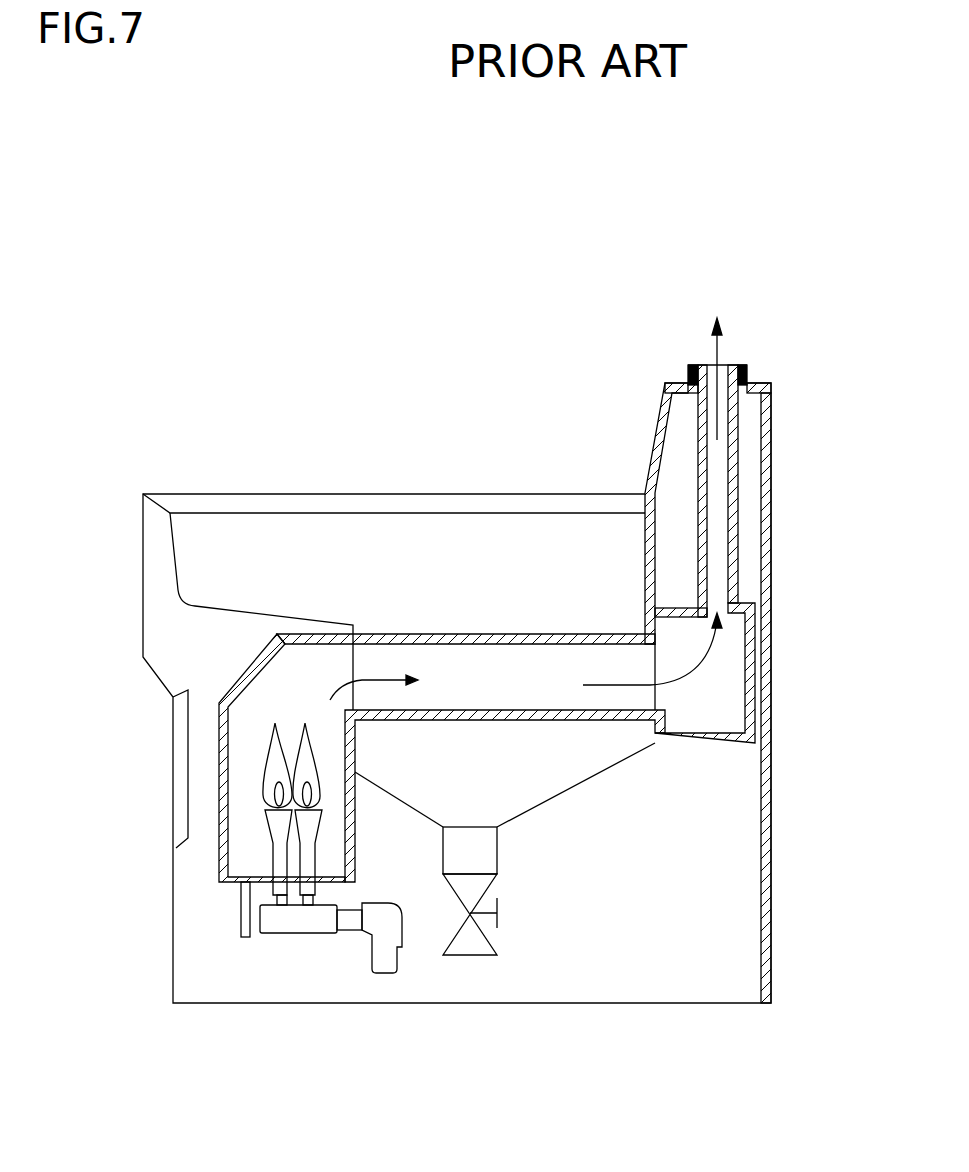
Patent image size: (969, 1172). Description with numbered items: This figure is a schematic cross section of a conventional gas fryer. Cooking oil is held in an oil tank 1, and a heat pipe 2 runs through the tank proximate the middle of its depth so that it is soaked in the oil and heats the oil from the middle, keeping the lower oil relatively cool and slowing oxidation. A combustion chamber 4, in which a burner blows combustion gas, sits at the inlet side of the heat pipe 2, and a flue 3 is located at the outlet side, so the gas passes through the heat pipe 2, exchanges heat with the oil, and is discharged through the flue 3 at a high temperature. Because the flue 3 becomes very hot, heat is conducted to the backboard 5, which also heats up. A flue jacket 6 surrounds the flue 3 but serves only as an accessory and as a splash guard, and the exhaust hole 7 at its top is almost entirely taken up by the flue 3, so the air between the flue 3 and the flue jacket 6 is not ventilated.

The oil tank 1 is at (410, 527).
The heat pipe 2 is at (478, 663).
The flue 3 is at (718, 543).
The combustion chamber 4 is at (264, 684).
The backboard 5 is at (770, 834).
The flue jacket 6 is at (661, 422).
The exhaust hole 7 is at (722, 364).